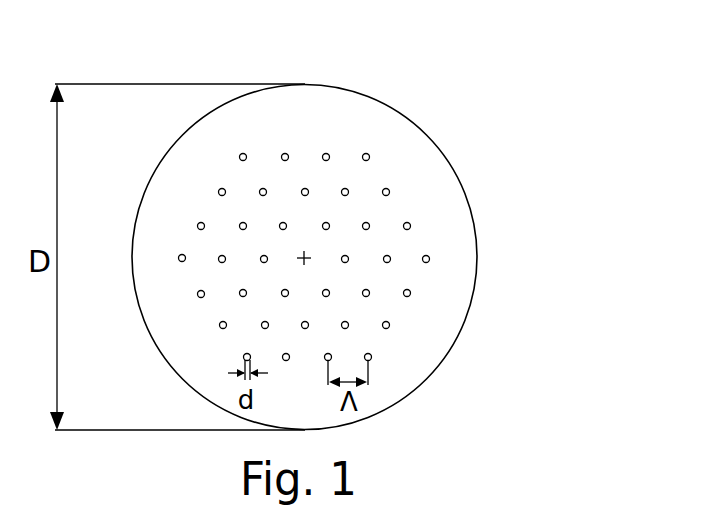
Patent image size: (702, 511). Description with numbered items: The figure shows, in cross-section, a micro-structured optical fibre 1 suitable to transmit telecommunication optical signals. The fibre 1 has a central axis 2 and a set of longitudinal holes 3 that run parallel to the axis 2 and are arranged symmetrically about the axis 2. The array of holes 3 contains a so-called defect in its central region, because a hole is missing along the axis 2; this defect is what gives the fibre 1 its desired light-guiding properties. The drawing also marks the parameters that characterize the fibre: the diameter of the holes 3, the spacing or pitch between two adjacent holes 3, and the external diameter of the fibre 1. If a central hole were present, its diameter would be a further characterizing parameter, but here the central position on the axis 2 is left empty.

The micro-structured optical fibre 1 is at (497, 115).
The central axis 2 is at (306, 256).
The longitudinal holes 3 is at (197, 228).